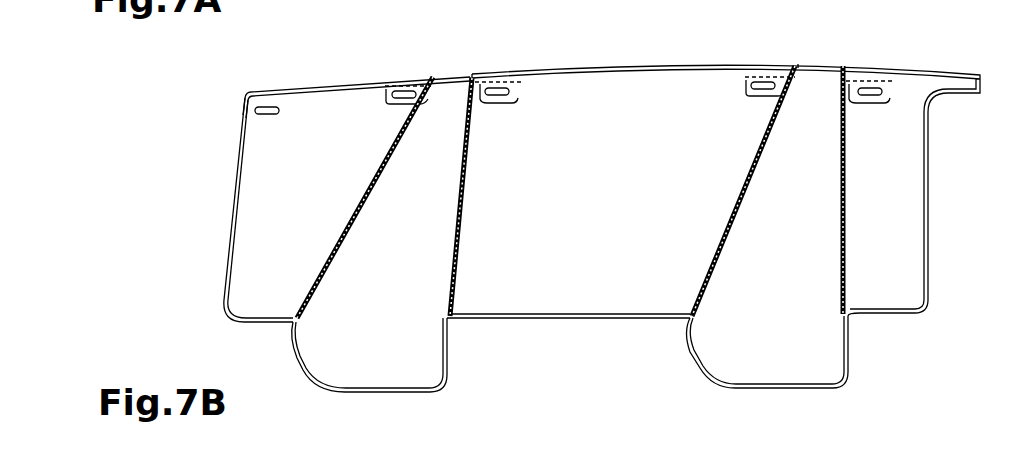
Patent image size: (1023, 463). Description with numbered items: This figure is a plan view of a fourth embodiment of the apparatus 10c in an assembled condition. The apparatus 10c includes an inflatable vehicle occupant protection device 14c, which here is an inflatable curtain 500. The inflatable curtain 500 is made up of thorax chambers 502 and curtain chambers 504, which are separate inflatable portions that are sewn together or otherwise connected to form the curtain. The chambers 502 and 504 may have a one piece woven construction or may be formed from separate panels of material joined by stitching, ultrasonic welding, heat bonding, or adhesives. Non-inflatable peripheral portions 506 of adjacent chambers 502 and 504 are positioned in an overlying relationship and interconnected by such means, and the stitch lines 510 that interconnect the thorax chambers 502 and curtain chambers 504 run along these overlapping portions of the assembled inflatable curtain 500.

The inflatable curtain 500 is at (372, 57).
The apparatus 10c is at (231, 81).
The inflatable vehicle occupant protection device 14c is at (199, 117).
The thorax chambers 502 is at (338, 343).
The curtain chambers 504 is at (596, 112).
The non-inflatable peripheral portions 506 is at (240, 187).
The stitch lines 510 is at (380, 172).